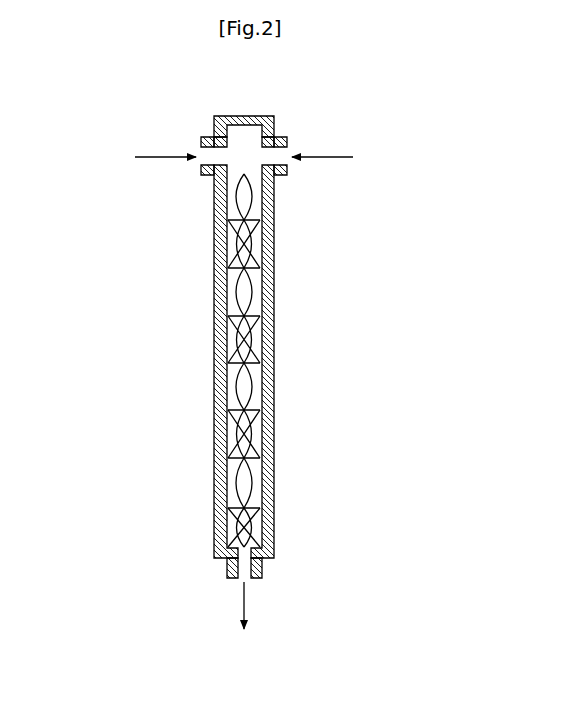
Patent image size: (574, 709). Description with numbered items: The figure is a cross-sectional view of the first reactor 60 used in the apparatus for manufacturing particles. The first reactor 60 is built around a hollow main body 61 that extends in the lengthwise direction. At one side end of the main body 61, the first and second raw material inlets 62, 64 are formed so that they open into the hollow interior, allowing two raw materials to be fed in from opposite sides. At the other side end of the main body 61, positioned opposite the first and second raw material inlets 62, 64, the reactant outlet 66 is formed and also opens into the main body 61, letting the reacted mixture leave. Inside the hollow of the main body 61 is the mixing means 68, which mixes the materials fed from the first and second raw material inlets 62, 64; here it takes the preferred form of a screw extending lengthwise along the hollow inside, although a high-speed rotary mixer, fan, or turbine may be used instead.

The first reactor 60 is at (246, 357).
The hollow main body 61 is at (274, 390).
The first raw material inlet 62 is at (206, 136).
The second raw material inlet 64 is at (283, 136).
The reactant outlet 66 is at (262, 572).
The mixing means 68 is at (262, 286).